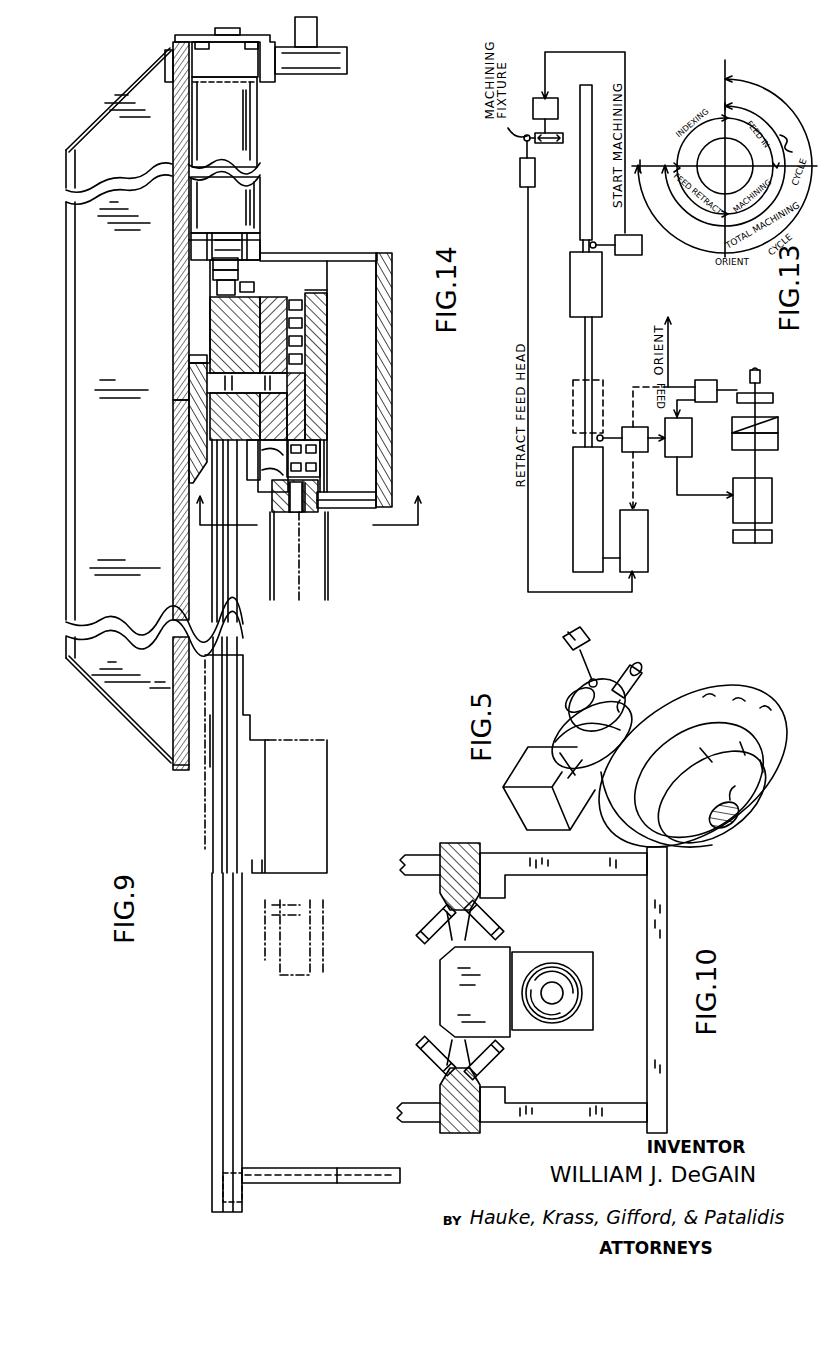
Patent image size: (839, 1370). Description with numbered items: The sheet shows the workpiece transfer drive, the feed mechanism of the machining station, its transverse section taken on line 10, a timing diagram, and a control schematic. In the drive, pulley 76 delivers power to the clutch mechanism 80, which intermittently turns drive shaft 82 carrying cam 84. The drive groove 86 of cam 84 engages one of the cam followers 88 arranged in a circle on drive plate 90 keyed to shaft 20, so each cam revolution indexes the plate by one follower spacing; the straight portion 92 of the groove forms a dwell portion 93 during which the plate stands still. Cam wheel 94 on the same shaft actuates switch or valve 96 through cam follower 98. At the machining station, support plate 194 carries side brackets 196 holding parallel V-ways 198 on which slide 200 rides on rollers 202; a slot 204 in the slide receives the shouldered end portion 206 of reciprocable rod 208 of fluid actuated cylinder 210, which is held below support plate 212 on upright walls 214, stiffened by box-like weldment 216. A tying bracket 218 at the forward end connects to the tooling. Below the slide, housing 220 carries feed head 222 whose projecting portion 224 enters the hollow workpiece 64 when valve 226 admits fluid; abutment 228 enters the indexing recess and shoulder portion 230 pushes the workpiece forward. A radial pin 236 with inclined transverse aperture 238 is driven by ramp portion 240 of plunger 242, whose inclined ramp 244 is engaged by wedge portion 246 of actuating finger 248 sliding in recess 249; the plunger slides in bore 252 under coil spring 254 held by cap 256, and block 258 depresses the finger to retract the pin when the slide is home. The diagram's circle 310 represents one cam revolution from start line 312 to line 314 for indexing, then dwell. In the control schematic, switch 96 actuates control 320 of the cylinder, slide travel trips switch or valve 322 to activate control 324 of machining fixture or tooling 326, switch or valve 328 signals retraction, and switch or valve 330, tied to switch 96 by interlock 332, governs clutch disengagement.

In FIG. 9, the section line 10 is at (314, 497).
In FIG. 5, the shaft 20 is at (727, 827).
In FIG. 9, the workpiece 64 is at (330, 560).
In FIG. 14, the workpiece 64 is at (580, 198).
In FIG. 14, the pulley 76 is at (750, 543).
In FIG. 14, the clutch mechanism 80 is at (772, 508).
In FIG. 5, the clutch mechanism 80 is at (522, 770).
In FIG. 14, the drive shaft 82 is at (756, 466).
In FIG. 5, the drive shaft 82 is at (560, 742).
In FIG. 14, the cam 84 is at (778, 444).
In FIG. 5, the cam 84 is at (578, 698).
In FIG. 5, the drive groove 86 is at (565, 725).
In FIG. 5, the cam follower 88 is at (683, 722).
In FIG. 5, the drive plate 90 is at (705, 700).
In FIG. 14, the straight portion 92 is at (778, 422).
In FIG. 5, the straight portion 92 is at (580, 700).
In FIG. 5, the dwell portion 93 is at (640, 745).
In FIG. 14, the cam wheel 94 is at (778, 396).
In FIG. 5, the cam wheel 94 is at (665, 690).
In FIG. 14, the switch or valve 96 is at (706, 380).
In FIG. 5, the switch or valve 96 is at (565, 641).
In FIG. 14, the cam follower 98 is at (738, 398).
In FIG. 5, the cam follower 98 is at (592, 652).
In FIG. 9, the support plate 194 is at (386, 253).
In FIG. 10, the support plate 194 is at (667, 919).
In FIG. 9, the side brackets 196 is at (300, 253).
In FIG. 10, the side brackets 196 is at (510, 853).
In FIG. 9, the V-ways 198 is at (241, 585).
In FIG. 10, the V-ways 198 is at (452, 843).
In FIG. 9, the slide 200 is at (210, 350).
In FIG. 10, the slide 200 is at (440, 976).
In FIG. 10, the rollers 202 is at (428, 920).
In FIG. 9, the slot 204 is at (213, 276).
In FIG. 9, the shouldered end portion 206 is at (254, 288).
In FIG. 9, the reciprocable rod 208 is at (222, 250).
In FIG. 14, the reciprocable rod 208 is at (585, 360).
In FIG. 9, the fluid actuated cylinder 210 is at (257, 104).
In FIG. 14, the fluid actuated cylinder 210 is at (585, 527).
In FIG. 9, the support plate 212 is at (173, 258).
In FIG. 9, the upright walls 214 is at (173, 590).
In FIG. 10, the upright walls 214 is at (425, 855).
In FIG. 9, the box-like weldment 216 is at (73, 272).
In FIG. 9, the tying bracket 218 is at (337, 1183).
In FIG. 9, the housing 220 is at (347, 390).
In FIG. 14, the housing 220 is at (570, 298).
In FIG. 10, the housing 220 is at (573, 952).
In FIG. 9, the feed head 222 is at (345, 480).
In FIG. 14, the feed head 222 is at (582, 245).
In FIG. 10, the feed head 222 is at (580, 991).
In FIG. 9, the projecting portion 224 is at (292, 514).
In FIG. 9, the valve 226 is at (347, 61).
In FIG. 9, the abutment 228 is at (262, 470).
In FIG. 10, the abutment 228 is at (522, 991).
In FIG. 9, the shoulder portion 230 is at (247, 459).
In FIG. 9, the radial pin 236 is at (272, 514).
In FIG. 9, the transverse aperture 238 is at (297, 512).
In FIG. 9, the ramp portion 240 is at (318, 514).
In FIG. 9, the plunger 242 is at (318, 458).
In FIG. 9, the inclined ramp 244 is at (331, 430).
In FIG. 9, the wedge portion 246 is at (273, 335).
In FIG. 9, the actuating finger 248 is at (235, 368).
In FIG. 9, the recess 249 is at (189, 357).
In FIG. 9, the bore 252 is at (331, 310).
In FIG. 9, the coil spring 254 is at (295, 300).
In FIG. 9, the cap 256 is at (320, 293).
In FIG. 9, the block 258 is at (189, 432).
In FIG. 13, the circle 310 is at (725, 166).
In FIG. 13, the start line 312 is at (645, 166).
In FIG. 13, the quarter-revolution line 314 is at (727, 116).
In FIG. 14, the control 320 is at (648, 545).
In FIG. 14, the switch or valve 322 is at (632, 255).
In FIG. 14, the control 324 is at (541, 98).
In FIG. 14, the machining fixture or tooling 326 is at (552, 143).
In FIG. 14, the switch or valve 328 is at (520, 178).
In FIG. 14, the switch or valve 330 is at (645, 452).
In FIG. 14, the interlock 332 is at (692, 430).